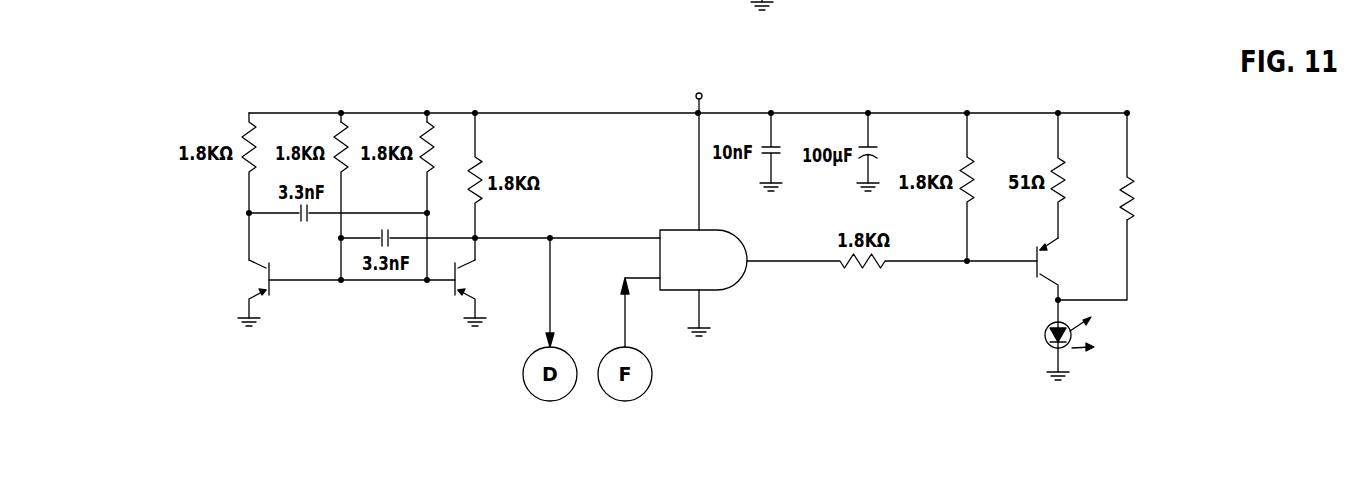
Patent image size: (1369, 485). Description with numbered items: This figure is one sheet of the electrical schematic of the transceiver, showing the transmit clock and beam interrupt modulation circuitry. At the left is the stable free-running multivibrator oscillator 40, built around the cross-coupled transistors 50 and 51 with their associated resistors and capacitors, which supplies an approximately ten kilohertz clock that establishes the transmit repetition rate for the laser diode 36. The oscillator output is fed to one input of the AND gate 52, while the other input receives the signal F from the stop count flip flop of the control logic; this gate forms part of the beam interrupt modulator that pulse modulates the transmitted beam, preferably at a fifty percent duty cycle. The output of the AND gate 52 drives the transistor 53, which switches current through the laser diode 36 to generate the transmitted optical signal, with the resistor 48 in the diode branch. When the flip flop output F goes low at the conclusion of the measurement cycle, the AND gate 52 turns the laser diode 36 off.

The multivibrator oscillator 40 is at (428, 76).
The transistor 50 is at (250, 267).
The transistor 51 is at (476, 266).
The AND gate 52 is at (678, 228).
The transistor 53 is at (1062, 249).
The resistor 48 is at (1130, 185).
The laser diode 36 is at (1046, 332).